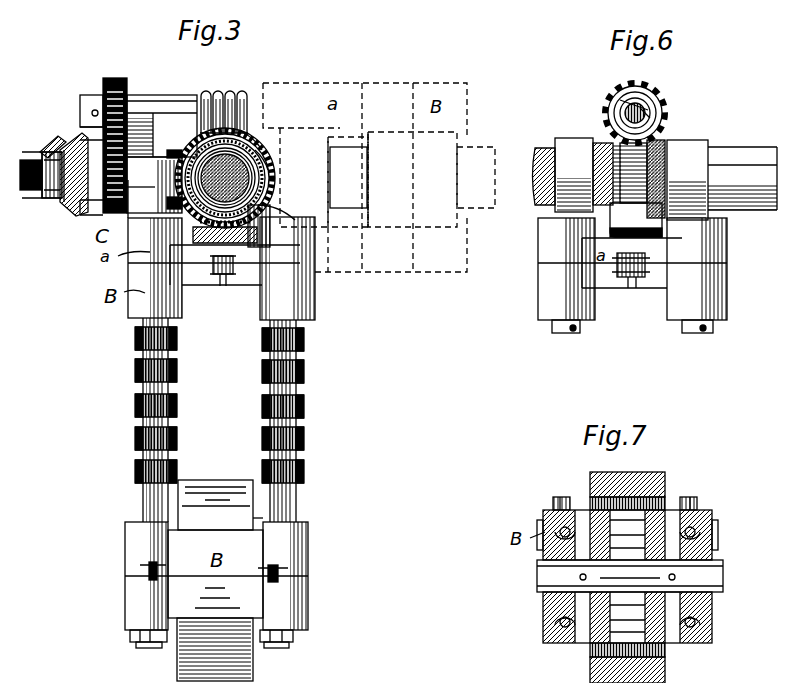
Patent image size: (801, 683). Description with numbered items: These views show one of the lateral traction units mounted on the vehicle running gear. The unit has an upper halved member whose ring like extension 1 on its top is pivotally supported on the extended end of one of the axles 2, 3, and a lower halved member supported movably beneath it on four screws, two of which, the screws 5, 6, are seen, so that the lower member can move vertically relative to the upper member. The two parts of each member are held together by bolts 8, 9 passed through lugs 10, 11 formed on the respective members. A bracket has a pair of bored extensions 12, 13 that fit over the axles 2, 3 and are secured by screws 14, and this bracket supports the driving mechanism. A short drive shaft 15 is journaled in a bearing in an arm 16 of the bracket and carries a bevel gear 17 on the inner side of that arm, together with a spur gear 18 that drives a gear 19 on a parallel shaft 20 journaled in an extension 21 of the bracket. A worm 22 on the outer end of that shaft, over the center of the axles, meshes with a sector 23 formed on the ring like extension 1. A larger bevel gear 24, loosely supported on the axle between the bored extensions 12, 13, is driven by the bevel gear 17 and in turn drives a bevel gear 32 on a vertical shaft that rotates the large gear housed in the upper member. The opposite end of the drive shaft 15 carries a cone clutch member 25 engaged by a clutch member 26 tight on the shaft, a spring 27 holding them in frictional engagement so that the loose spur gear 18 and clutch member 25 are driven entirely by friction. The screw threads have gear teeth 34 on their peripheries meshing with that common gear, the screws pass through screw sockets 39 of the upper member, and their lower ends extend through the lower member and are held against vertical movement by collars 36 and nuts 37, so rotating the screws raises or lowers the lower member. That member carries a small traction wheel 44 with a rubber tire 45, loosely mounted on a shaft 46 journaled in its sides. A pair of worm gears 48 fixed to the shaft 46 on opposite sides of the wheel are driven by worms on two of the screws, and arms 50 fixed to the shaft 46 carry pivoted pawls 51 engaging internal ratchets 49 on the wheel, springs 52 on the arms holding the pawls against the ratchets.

In FIG. 6, the ring like extension 1 is at (650, 205).
In FIG. 3, the axle 2 is at (270, 206).
In FIG. 6, the axle 2 is at (543, 158).
In FIG. 3, the axle 3 is at (150, 562).
In FIG. 3, the screw 5 is at (142, 385).
In FIG. 6, the screw 5 is at (580, 328).
In FIG. 7, the screw 5 is at (570, 500).
In FIG. 3, the screw 6 is at (300, 359).
In FIG. 6, the screw 6 is at (713, 328).
In FIG. 3, the screw or bolt 8 is at (213, 260).
In FIG. 6, the screw or bolt 8 is at (645, 258).
In FIG. 3, the screw or bolt 9 is at (290, 560).
In FIG. 3, the lug 10 is at (223, 284).
In FIG. 6, the lug 10 is at (633, 286).
In FIG. 3, the lug 11 is at (284, 576).
In FIG. 6, the bored extension 12 is at (690, 150).
In FIG. 3, the bored extension 13 is at (258, 148).
In FIG. 6, the bored extension 13 is at (573, 145).
In FIG. 7, the screw 14 is at (692, 508).
In FIG. 3, the drive shaft 15 is at (60, 204).
In FIG. 3, the arm 16 is at (106, 141).
In FIG. 3, the bevel gear 17 is at (176, 150).
In FIG. 3, the spur gear 18 is at (78, 210).
In FIG. 3, the gear 19 is at (115, 78).
In FIG. 6, the gear 19 is at (648, 100).
In FIG. 3, the parallel shaft 20 is at (82, 108).
In FIG. 6, the parallel shaft 20 is at (652, 114).
In FIG. 3, the extension 21 is at (154, 100).
In FIG. 3, the worm 22 is at (237, 93).
In FIG. 6, the worm 22 is at (632, 100).
In FIG. 3, the sector 23 is at (266, 178).
In FIG. 6, the sector 23 is at (628, 160).
In FIG. 3, the bevel gear 24 is at (242, 131).
In FIG. 6, the bevel gear 24 is at (660, 142).
In FIG. 3, the cone clutch member 25 is at (54, 140).
In FIG. 3, the clutch member 26 is at (66, 200).
In FIG. 3, the spring 27 is at (32, 192).
In FIG. 3, the bevel gear 32 is at (178, 263).
In FIG. 6, the bevel gear 32 is at (600, 242).
In FIG. 3, the gear teeth 34 is at (262, 410).
In FIG. 3, the collar 36 is at (130, 636).
In FIG. 3, the nut 37 is at (140, 646).
In FIG. 3, the screw socket 39 is at (221, 251).
In FIG. 6, the screw socket 39 is at (632, 269).
In FIG. 3, the traction wheel 44 is at (250, 660).
In FIG. 7, the traction wheel 44 is at (590, 492).
In FIG. 3, the rubber tire 45 is at (240, 480).
In FIG. 7, the rubber tire 45 is at (665, 483).
In FIG. 7, the shaft 46 is at (700, 575).
In FIG. 7, the worm gear 48 is at (558, 528).
In FIG. 7, the internal ratchet 49 is at (560, 508).
In FIG. 7, the arm 50 is at (712, 632).
In FIG. 7, the pawl 51 is at (712, 616).
In FIG. 7, the spring 52 is at (590, 562).